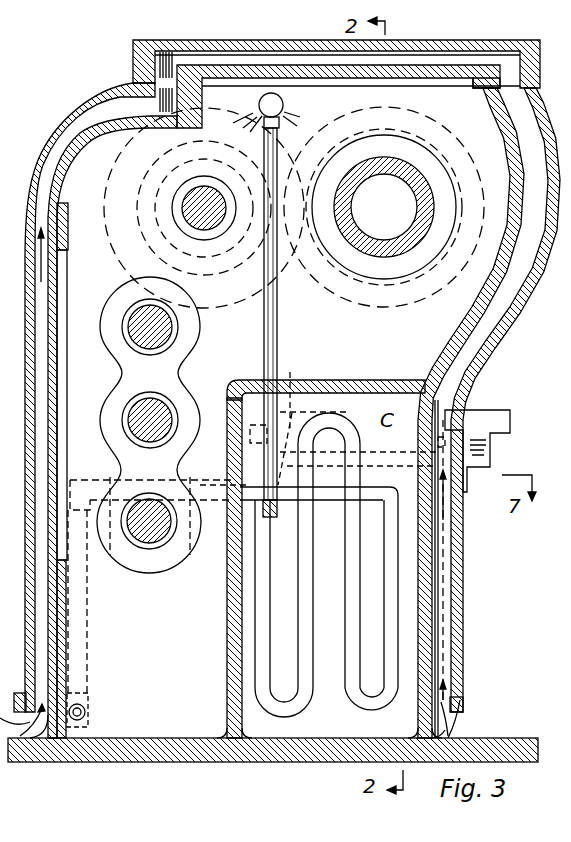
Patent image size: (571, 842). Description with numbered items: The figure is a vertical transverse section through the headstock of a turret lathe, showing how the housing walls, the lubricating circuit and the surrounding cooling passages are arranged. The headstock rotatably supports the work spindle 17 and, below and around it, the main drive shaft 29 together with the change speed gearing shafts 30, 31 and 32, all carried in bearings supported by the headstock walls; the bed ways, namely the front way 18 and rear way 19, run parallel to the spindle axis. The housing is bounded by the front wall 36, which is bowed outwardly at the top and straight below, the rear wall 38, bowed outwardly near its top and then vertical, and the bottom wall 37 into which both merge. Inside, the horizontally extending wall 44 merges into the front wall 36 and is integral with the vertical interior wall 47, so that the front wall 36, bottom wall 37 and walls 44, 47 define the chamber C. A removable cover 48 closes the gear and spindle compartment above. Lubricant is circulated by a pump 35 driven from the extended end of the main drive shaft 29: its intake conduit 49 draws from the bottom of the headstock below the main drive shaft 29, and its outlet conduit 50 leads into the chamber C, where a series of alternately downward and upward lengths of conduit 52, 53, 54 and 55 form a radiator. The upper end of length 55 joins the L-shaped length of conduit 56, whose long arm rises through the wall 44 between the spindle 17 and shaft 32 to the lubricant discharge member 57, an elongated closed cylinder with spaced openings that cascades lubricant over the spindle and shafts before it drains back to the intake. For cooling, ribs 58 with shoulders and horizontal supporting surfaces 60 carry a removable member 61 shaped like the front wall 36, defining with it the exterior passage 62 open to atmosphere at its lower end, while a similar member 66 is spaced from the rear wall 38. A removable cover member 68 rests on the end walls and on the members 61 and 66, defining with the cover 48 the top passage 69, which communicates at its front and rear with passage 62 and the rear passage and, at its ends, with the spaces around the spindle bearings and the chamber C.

The work spindle 17 is at (357, 213).
The front way 18 is at (477, 412).
The rear way 19 is at (292, 380).
The main drive shaft 29 is at (157, 532).
The shaft 30 is at (160, 410).
The shaft 31 is at (167, 340).
The shaft 32 is at (199, 221).
The pump 35 is at (110, 463).
The front wall 36 is at (458, 338).
The bottom wall 37 is at (262, 758).
The rear wall 38 is at (67, 173).
The horizontally extending wall 44 is at (320, 381).
The vertical interior wall 47 is at (229, 643).
The removable cover 48 is at (440, 70).
The conduit 49 is at (82, 634).
The horizontally extending conduit 50 is at (334, 500).
The length of conduit 52 is at (391, 641).
The length of conduit 53 is at (348, 621).
The length of conduit 54 is at (303, 604).
The length of conduit 55 is at (262, 578).
The L-shaped length of conduit 56 is at (279, 327).
The lubricant discharge member 57 is at (284, 108).
The ribs 58 is at (453, 729).
The supporting surfaces 60 is at (462, 713).
The member 61 is at (513, 318).
The passage 62 is at (441, 581).
The member 66 is at (62, 145).
The removable cover member 68 is at (190, 42).
The passage 69 is at (257, 57).